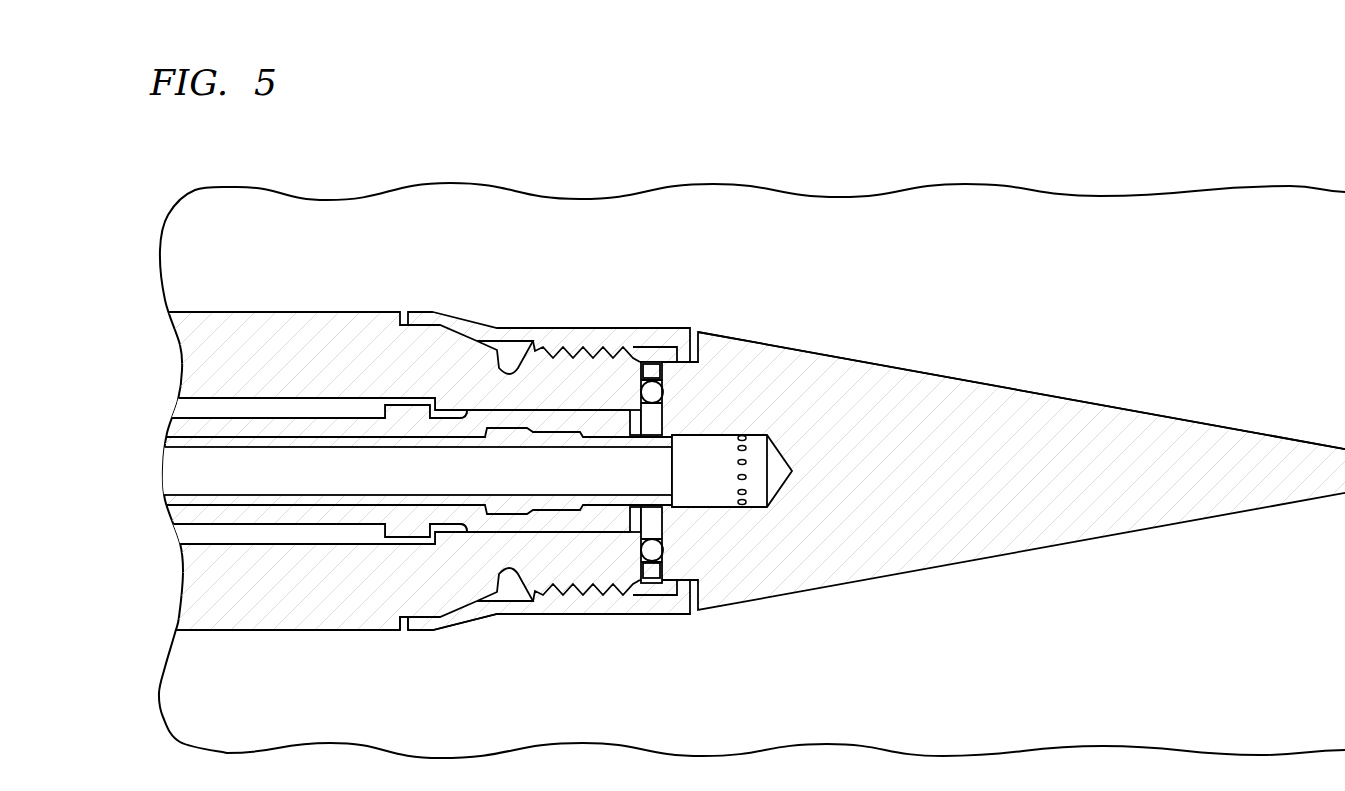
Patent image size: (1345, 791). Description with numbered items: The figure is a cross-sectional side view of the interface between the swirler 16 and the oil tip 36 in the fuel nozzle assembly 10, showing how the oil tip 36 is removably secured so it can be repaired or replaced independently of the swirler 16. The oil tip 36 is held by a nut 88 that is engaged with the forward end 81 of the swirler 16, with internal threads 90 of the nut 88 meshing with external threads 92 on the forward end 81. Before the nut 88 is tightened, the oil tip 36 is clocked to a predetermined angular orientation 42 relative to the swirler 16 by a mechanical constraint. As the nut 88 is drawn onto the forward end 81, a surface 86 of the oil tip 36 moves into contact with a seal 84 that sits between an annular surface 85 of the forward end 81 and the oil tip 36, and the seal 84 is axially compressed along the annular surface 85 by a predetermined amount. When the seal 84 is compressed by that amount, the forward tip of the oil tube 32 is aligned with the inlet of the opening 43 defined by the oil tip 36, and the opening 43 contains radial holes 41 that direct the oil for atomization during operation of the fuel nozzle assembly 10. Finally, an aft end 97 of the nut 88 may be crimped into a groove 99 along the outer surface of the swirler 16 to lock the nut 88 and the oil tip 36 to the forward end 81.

The fuel nozzle assembly 10 is at (1243, 150).
The swirler 16 is at (129, 389).
The oil tube 32 is at (246, 481).
The oil tip 36 is at (1132, 408).
The radial holes 41 is at (738, 463).
The predetermined angular orientation 42 is at (1010, 368).
The opening 43 is at (688, 438).
The forward end 81 is at (275, 335).
The seal 84 is at (653, 385).
The annular surface 85 is at (650, 540).
The surface 86 is at (663, 537).
The nut 88 is at (489, 299).
The internal threads 90 is at (577, 329).
The external threads 92 is at (603, 337).
The aft end 97 is at (413, 630).
The groove 99 is at (402, 630).